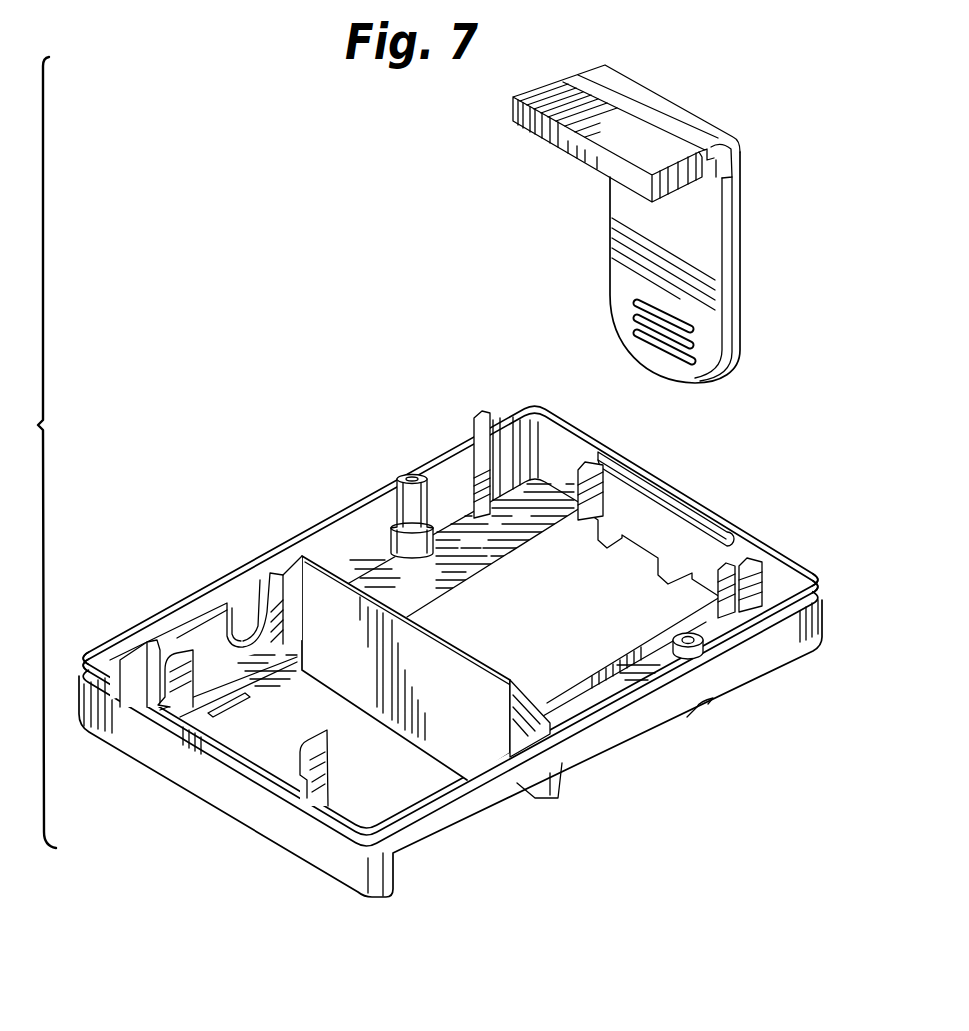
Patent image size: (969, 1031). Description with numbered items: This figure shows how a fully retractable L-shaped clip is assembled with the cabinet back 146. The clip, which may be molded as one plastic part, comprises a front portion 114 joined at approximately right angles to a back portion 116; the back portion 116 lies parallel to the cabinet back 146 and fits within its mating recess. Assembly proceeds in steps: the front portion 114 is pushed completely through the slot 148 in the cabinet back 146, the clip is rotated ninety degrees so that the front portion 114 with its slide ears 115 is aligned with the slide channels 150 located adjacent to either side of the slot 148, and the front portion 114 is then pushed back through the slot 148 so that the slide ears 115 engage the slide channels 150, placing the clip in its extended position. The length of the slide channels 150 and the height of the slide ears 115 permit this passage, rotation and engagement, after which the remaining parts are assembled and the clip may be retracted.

The front portion 114 is at (641, 128).
The slide ears 115 is at (700, 182).
The back portion 116 is at (738, 317).
The cabinet back 146 is at (208, 800).
The slot 148 is at (648, 540).
The slide channels 150 is at (613, 478).